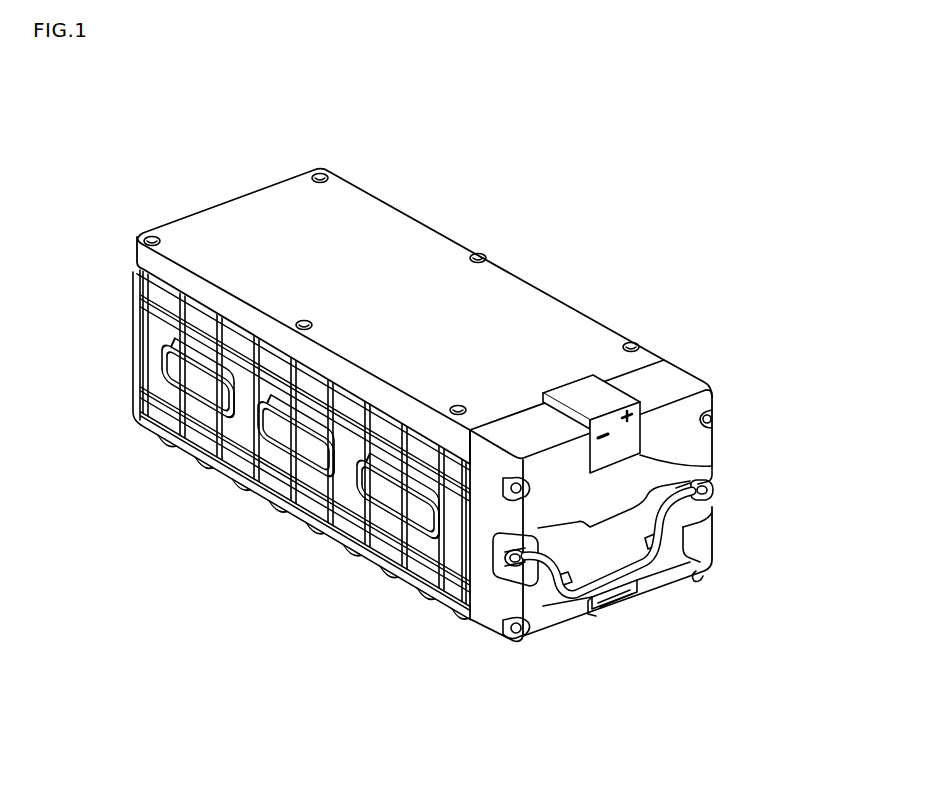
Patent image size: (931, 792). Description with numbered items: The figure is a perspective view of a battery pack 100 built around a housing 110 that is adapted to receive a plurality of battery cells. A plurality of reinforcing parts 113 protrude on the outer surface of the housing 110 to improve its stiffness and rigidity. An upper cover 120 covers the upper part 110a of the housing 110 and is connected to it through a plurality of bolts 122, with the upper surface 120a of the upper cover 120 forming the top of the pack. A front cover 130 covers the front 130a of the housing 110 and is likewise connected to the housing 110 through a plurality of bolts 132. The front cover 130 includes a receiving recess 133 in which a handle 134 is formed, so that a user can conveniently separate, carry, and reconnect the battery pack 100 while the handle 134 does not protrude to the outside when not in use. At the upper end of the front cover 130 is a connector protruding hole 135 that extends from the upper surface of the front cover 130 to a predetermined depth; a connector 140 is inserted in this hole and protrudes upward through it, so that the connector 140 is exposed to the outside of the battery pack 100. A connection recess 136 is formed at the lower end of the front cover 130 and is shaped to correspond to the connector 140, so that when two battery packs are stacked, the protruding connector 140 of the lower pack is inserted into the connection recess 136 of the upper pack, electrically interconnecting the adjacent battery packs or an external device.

The battery pack 100 is at (181, 130).
The housing 110 is at (454, 613).
The upper part of the housing 110a is at (122, 290).
The reinforcing parts 113 is at (357, 547).
The upper cover 120 is at (138, 255).
The upper surface of the upper cover 120a is at (532, 297).
The bolts 122 is at (478, 254).
The front cover 130 is at (673, 378).
The front of the housing 130a is at (728, 533).
The bolts 132 is at (714, 420).
The receiving recess 133 is at (592, 560).
The handle 134 is at (643, 563).
The connector protruding hole 135 is at (566, 392).
The connection recess 136 is at (619, 601).
The connector 140 is at (713, 465).